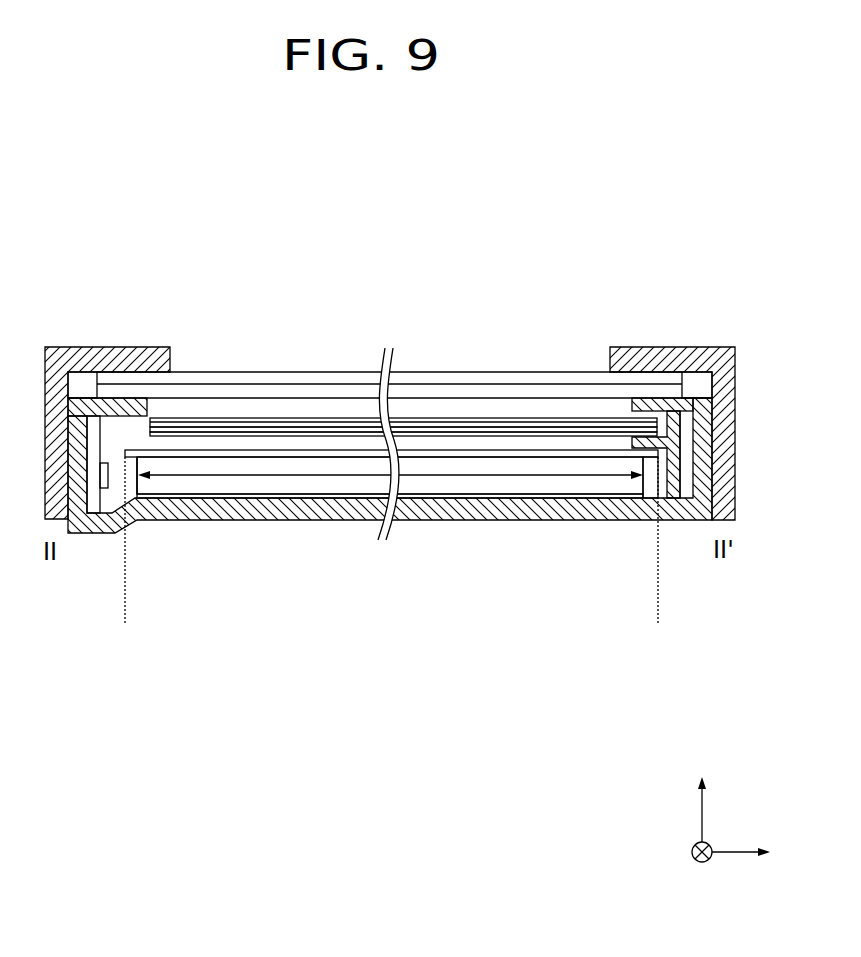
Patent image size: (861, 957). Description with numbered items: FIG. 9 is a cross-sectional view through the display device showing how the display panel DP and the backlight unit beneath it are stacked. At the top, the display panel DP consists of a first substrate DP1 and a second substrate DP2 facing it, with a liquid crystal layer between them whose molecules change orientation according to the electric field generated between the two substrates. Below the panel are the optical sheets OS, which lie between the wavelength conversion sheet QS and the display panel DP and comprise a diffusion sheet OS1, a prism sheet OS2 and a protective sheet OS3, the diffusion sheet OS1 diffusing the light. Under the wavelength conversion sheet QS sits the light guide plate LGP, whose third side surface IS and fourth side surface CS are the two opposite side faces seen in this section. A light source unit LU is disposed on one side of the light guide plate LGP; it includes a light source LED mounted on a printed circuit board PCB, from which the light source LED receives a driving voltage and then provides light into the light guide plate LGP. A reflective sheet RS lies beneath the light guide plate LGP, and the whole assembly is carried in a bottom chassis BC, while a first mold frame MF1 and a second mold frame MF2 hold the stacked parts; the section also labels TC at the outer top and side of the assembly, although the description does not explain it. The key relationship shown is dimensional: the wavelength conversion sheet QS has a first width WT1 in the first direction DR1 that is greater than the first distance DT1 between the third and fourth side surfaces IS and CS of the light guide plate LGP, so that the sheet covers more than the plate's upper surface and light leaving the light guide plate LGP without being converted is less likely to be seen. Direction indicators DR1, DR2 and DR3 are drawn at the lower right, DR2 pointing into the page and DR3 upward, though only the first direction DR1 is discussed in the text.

The top chassis TC is at (733, 358).
The first mold frame MF1 is at (683, 410).
The bottom chassis BC is at (700, 440).
The second mold frame MF2 is at (676, 450).
The display panel DP is at (390, 318).
The first substrate DP1 is at (658, 285).
The second substrate DP2 is at (588, 372).
The optical sheets OS is at (403, 337).
The diffusion sheet OS1 is at (532, 285).
The prism sheet OS2 is at (458, 428).
The protective sheet OS3 is at (508, 422).
The wavelength conversion sheet QS is at (238, 448).
The first distance DT1 is at (286, 477).
The third side surface IS is at (136, 473).
The light guide plate LGP is at (580, 485).
The reflective sheet RS is at (532, 497).
The fourth side surface CS is at (646, 500).
The printed circuit board PCB is at (90, 515).
The light source LED is at (103, 489).
The light source unit LU is at (76, 573).
The first width WT1 is at (648, 608).
The first direction DR1 is at (763, 852).
The second direction DR2 is at (705, 869).
The third direction DR3 is at (702, 795).